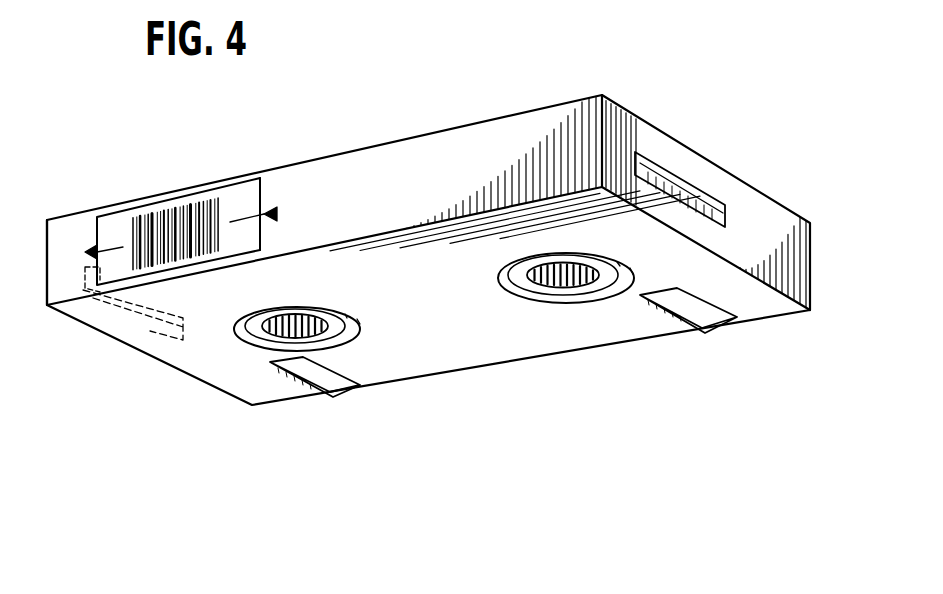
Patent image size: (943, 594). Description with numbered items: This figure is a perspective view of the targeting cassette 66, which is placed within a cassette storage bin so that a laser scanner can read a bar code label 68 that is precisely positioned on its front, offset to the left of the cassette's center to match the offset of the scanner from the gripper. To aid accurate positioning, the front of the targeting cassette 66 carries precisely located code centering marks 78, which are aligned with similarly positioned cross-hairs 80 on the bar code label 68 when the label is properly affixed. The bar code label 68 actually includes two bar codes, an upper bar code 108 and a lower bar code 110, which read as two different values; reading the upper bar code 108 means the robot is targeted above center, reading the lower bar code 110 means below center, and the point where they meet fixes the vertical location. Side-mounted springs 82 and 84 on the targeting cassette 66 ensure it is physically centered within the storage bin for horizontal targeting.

The targeting cassette 66 is at (473, 138).
The bar code label 68 is at (94, 228).
The upper bar code 108 is at (132, 228).
The cross-hairs 80 is at (243, 218).
The code centering marks 78 is at (277, 214).
The lower bar code 110 is at (134, 250).
The side-mounted spring 84 is at (140, 318).
The side-mounted spring 82 is at (668, 177).